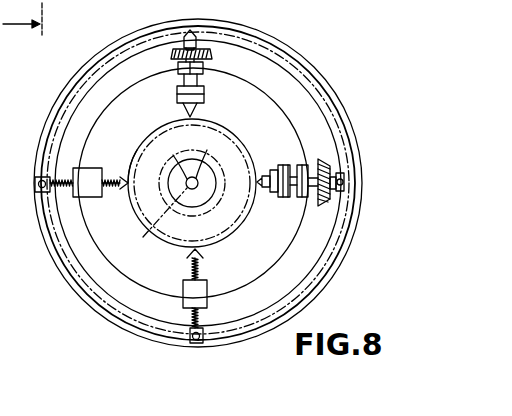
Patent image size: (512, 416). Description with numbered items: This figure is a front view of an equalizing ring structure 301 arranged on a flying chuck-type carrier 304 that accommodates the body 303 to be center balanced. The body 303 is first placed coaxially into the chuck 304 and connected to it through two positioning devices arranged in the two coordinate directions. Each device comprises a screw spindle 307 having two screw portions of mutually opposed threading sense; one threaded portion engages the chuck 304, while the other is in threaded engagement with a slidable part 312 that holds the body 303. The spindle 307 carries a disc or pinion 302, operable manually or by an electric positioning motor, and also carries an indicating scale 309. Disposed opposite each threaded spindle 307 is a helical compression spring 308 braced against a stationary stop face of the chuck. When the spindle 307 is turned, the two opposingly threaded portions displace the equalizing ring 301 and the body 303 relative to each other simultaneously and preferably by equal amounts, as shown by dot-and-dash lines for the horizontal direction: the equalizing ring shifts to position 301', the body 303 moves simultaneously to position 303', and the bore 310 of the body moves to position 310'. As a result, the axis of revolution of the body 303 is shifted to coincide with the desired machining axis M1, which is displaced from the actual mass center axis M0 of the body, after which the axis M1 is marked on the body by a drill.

The equalizing ring structure 301 is at (198, 184).
The dot-and-dash line position of equalizing ring 301' is at (208, 183).
The disc or pinion 302 is at (186, 32).
The body to be center balanced 303 is at (198, 189).
The dot-and-dash line position of body 303' is at (109, 184).
The flying chuck-type carrier 304 is at (309, 110).
The screw spindle 307 is at (177, 78).
The helical compression spring 308 is at (75, 170).
The indicating scale 309 is at (210, 56).
The bore of the body 310 is at (197, 193).
The dot-and-dash line position of bore 310' is at (165, 197).
The slidable part 312 is at (200, 110).
The actual mass center axis M0 is at (168, 161).
The desired machining axis M1 is at (209, 159).